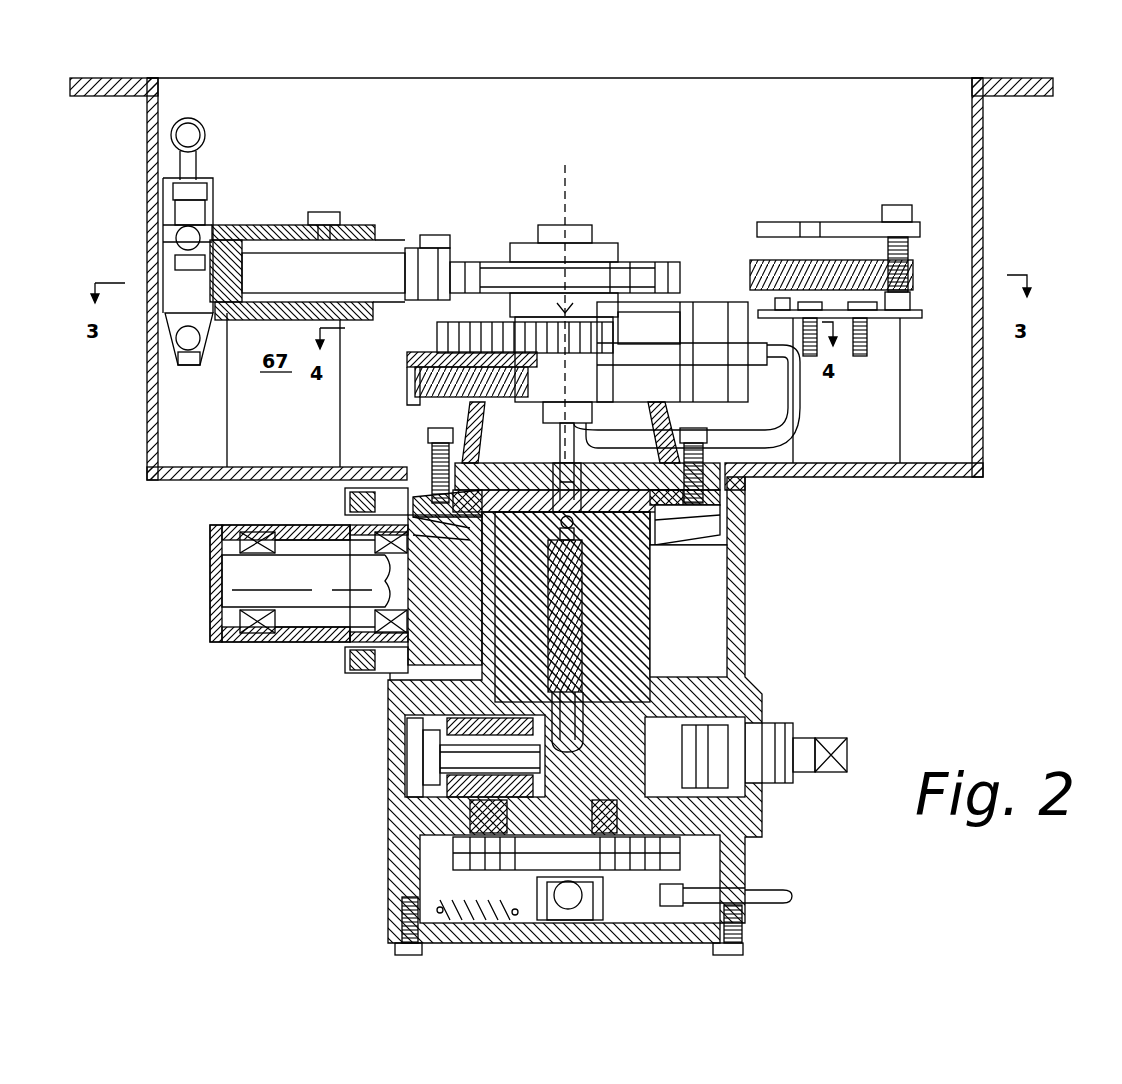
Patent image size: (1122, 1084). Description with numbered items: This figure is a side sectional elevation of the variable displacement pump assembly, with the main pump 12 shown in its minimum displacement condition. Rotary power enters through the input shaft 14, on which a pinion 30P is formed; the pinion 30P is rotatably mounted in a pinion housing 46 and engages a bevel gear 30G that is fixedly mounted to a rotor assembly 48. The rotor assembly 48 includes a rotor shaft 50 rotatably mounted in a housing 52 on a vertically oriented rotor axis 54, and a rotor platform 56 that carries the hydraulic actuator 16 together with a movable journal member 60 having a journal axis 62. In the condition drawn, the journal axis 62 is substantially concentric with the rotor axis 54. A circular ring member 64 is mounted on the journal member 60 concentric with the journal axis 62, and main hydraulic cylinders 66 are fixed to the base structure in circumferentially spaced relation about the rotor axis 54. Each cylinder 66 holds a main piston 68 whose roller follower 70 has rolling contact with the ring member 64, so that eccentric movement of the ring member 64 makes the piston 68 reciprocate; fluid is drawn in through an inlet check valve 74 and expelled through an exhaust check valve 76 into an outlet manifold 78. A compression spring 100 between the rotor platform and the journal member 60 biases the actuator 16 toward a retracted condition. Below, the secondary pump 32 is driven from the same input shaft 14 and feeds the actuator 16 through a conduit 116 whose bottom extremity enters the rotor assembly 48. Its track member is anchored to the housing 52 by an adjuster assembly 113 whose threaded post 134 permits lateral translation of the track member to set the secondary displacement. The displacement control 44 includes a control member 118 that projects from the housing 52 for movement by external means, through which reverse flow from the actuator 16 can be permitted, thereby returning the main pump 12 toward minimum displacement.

The main pump 12 is at (455, 158).
The input shaft 14 is at (240, 581).
The hydraulic actuator 16 is at (718, 302).
The bevel gear 30G is at (700, 540).
The pinion 30P is at (437, 635).
The secondary pump 32 is at (375, 793).
The displacement control 44 is at (770, 877).
The pinion housing 46 is at (240, 643).
The rotor assembly 48 is at (632, 587).
The rotor shaft 50 is at (620, 604).
The housing 52 is at (745, 615).
The rotor axis 54 is at (562, 435).
The rotor platform 56 is at (405, 380).
The journal member 60 is at (600, 252).
The journal axis 62 is at (565, 178).
The circular ring member 64 is at (481, 262).
The main hydraulic cylinder 66 is at (370, 247).
The main piston 68 is at (366, 282).
The roller follower 70 is at (417, 248).
The inlet check valve 74 is at (208, 355).
The exhaust check valve 76 is at (190, 232).
The outlet manifold 78 is at (206, 135).
The compression spring 100 is at (432, 404).
The adjuster assembly 113 is at (785, 690).
The conduit 116 is at (775, 410).
The control member 118 is at (780, 903).
The threaded post 134 is at (835, 745).